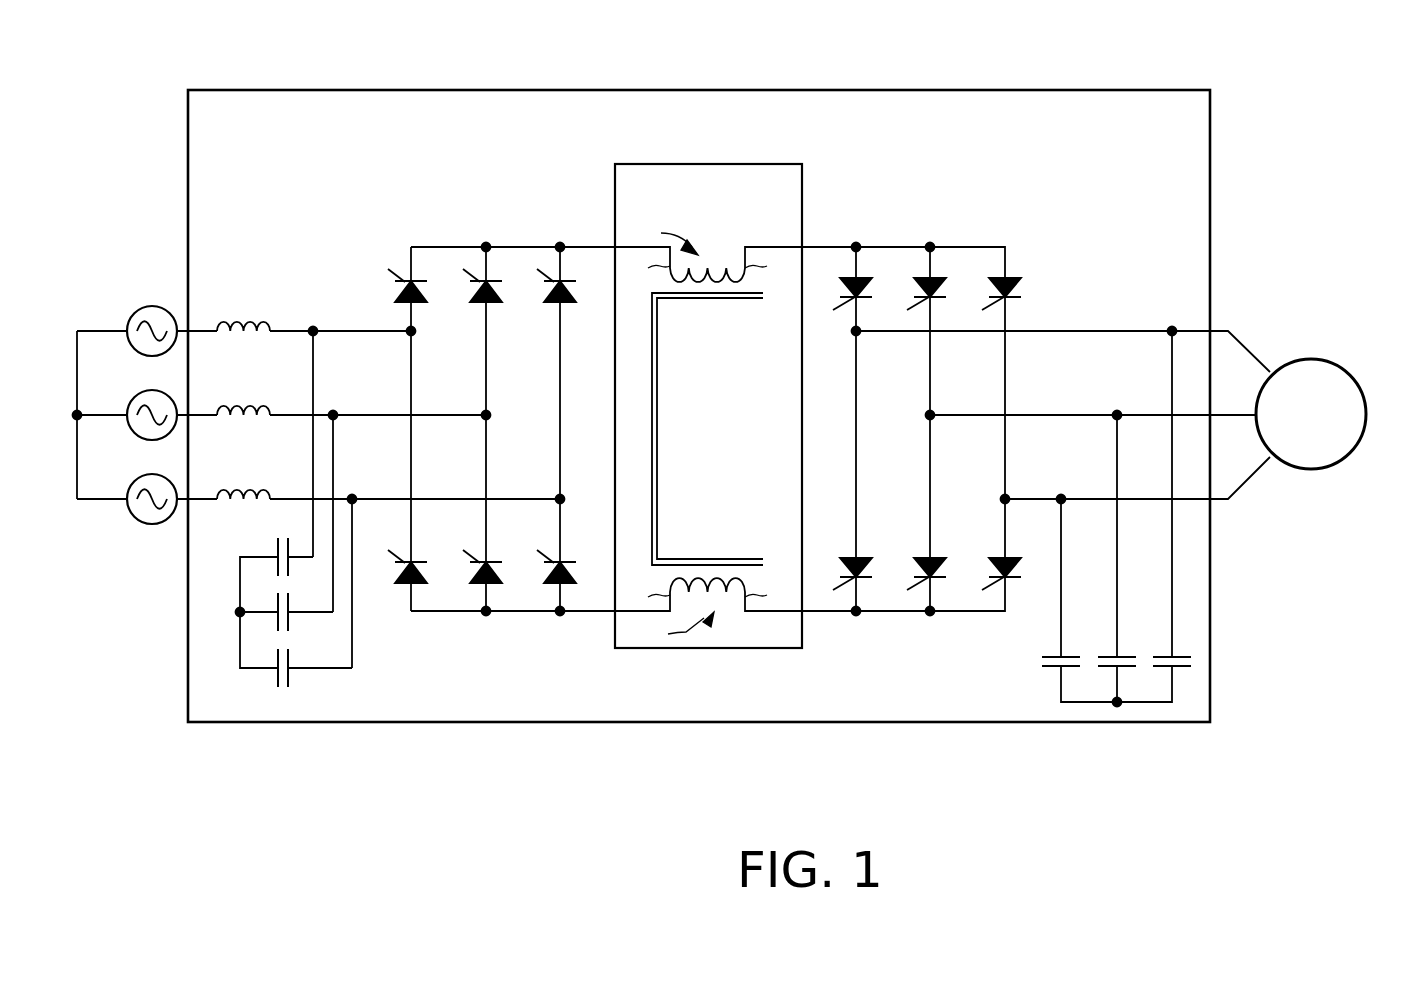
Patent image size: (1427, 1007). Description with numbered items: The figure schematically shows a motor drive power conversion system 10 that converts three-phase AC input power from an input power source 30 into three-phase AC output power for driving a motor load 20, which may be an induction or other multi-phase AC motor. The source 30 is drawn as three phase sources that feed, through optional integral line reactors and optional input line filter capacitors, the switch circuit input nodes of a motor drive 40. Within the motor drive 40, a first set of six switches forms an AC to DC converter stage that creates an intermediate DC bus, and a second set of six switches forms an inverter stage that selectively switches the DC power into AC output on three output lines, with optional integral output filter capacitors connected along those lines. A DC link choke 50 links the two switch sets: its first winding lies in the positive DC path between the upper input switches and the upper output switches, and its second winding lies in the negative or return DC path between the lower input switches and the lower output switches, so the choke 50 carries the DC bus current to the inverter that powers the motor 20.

The motor drive power conversion system 10 is at (236, 46).
The motor load 20 is at (1362, 438).
The input power source 30 is at (137, 548).
The motor drive 40 is at (187, 111).
The DC link choke 50 is at (614, 186).